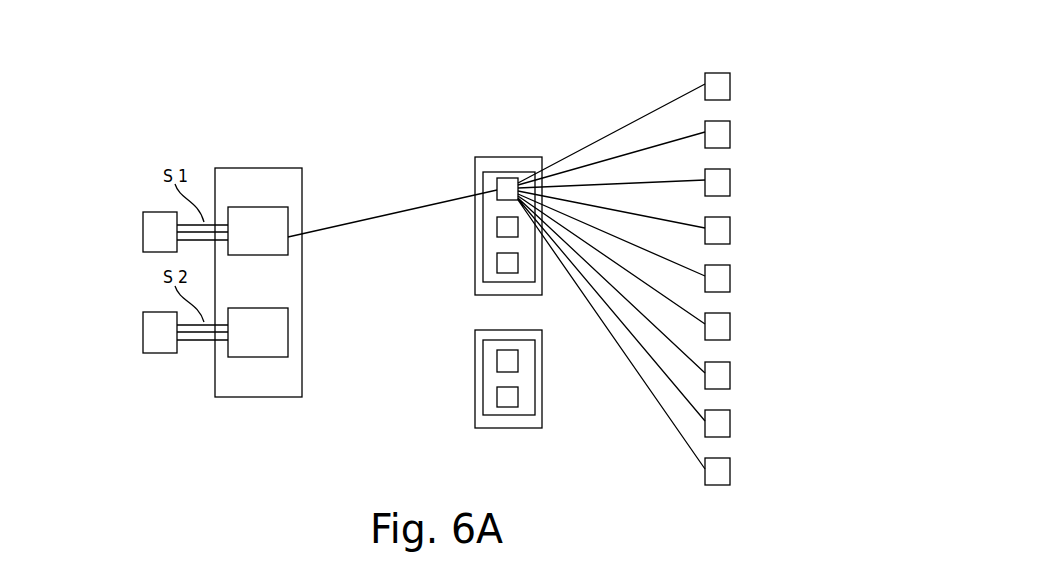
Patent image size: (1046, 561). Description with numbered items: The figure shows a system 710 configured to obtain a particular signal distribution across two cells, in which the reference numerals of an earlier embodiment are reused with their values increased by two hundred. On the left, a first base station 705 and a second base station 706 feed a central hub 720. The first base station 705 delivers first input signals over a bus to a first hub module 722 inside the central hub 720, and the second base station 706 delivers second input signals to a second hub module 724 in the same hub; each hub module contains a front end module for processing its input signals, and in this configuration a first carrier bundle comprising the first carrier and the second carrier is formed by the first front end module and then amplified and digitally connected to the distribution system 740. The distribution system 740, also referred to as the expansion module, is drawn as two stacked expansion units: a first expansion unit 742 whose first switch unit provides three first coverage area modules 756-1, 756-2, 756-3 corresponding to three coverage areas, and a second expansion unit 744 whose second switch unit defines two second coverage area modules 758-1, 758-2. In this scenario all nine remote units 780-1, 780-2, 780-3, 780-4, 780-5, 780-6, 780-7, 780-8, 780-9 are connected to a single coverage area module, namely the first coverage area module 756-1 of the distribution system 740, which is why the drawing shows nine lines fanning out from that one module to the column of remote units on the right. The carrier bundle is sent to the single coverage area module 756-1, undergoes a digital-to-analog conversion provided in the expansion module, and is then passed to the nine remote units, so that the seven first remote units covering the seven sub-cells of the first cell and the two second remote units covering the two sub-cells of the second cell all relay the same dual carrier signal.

The system 710 is at (178, 118).
The first base station 705 is at (143, 232).
The second base station 706 is at (143, 332).
The central hub 720 is at (240, 168).
The first hub module 722 is at (257, 207).
The second hub module 724 is at (258, 358).
The distribution system 740 is at (525, 157).
The first expansion unit 742 is at (460, 175).
The second expansion unit 744 is at (517, 415).
The first coverage area module 756-1 is at (497, 197).
The first coverage area module 756-2 is at (497, 232).
The first coverage area module 756-3 is at (497, 268).
The second coverage area module 758-1 is at (497, 365).
The second coverage area module 758-2 is at (497, 402).
The remote unit 780-1 is at (730, 85).
The remote unit 780-2 is at (730, 133).
The remote unit 780-3 is at (730, 181).
The remote unit 780-4 is at (730, 229).
The remote unit 780-5 is at (730, 277).
The remote unit 780-6 is at (730, 325).
The remote unit 780-7 is at (730, 374).
The remote unit 780-8 is at (730, 422).
The remote unit 780-9 is at (730, 470).